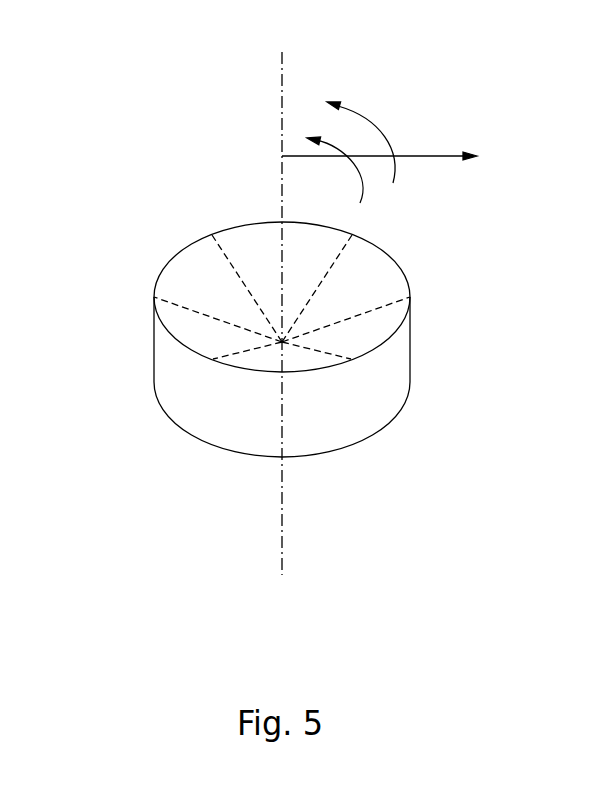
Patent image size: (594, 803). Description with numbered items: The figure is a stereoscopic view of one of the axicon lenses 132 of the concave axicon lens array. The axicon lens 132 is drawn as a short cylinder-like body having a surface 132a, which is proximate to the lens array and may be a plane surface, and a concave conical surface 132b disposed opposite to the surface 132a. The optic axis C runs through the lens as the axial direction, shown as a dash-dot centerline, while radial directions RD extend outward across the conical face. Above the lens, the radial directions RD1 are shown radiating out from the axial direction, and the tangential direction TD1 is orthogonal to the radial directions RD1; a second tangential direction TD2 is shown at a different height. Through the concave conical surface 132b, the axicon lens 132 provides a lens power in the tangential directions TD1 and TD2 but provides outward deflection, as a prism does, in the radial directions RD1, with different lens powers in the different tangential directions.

The axicon lens 132 is at (302, 272).
The surface 132a is at (353, 443).
The concave conical surface 132b is at (377, 272).
The optic axis C is at (284, 297).
The radial directions RD is at (167, 318).
The radial directions RD1 is at (450, 155).
The tangential direction TD1 is at (367, 187).
The tangential direction TD2 is at (388, 137).